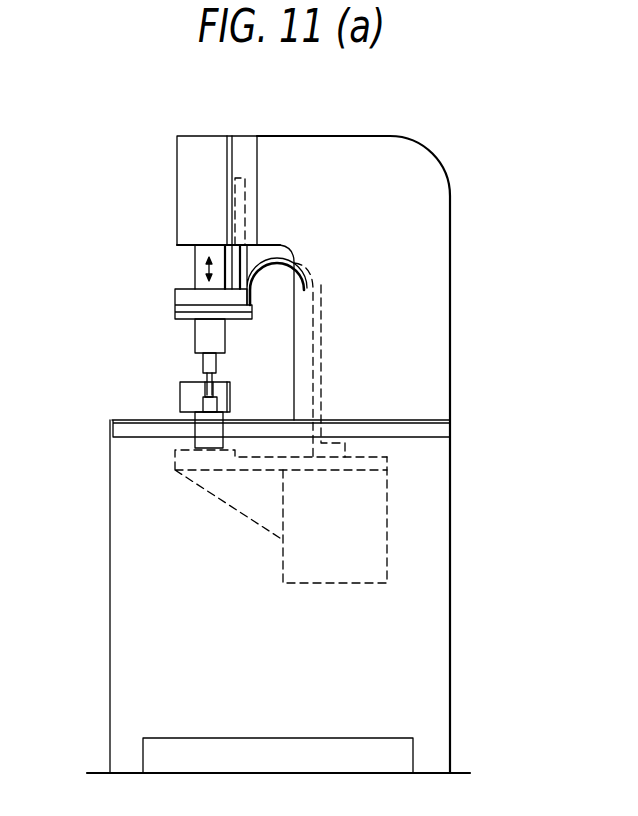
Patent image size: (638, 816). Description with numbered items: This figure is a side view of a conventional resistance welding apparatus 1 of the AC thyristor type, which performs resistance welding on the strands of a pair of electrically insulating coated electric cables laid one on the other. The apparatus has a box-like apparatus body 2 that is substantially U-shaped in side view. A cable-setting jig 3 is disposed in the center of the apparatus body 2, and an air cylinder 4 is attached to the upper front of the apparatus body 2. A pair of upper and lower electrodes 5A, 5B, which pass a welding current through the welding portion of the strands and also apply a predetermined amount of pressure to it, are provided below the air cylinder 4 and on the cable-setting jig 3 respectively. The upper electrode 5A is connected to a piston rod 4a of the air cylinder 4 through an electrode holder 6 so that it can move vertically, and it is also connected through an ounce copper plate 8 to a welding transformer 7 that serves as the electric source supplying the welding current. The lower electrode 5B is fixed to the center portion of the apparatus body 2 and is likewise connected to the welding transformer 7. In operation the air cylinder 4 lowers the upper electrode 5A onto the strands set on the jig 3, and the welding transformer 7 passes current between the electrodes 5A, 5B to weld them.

The resistance welding apparatus 1 is at (478, 446).
The apparatus body 2 is at (95, 632).
The cable-setting jig 3 is at (180, 388).
The air cylinder 4 is at (177, 150).
The piston rod 4a is at (195, 259).
The upper electrode 5A is at (203, 365).
The lower electrode 5B is at (203, 401).
The electrode holder 6 is at (195, 333).
The welding transformer 7 is at (388, 558).
The ounce copper plate 8 is at (280, 245).